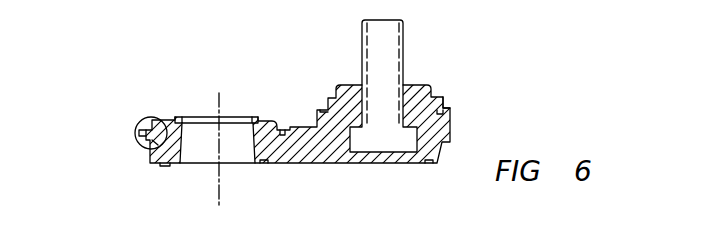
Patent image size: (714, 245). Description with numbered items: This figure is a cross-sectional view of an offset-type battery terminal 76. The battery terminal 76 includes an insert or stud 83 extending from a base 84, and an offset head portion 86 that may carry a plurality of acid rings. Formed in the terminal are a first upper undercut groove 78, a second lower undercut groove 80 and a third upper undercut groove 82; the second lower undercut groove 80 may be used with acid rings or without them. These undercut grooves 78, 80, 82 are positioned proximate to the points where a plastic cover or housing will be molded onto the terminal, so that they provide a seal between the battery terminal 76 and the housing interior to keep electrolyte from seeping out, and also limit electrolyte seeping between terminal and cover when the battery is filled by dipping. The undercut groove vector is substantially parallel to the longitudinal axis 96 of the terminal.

The battery terminal 76 is at (498, 63).
The first upper undercut groove 78 is at (143, 121).
The second lower undercut groove 80 is at (166, 166).
The third upper undercut groove 82 is at (441, 101).
The insert or stud 83 is at (390, 50).
The base 84 is at (305, 153).
The offset head portion 86 is at (182, 183).
The longitudinal axis 96 is at (219, 102).